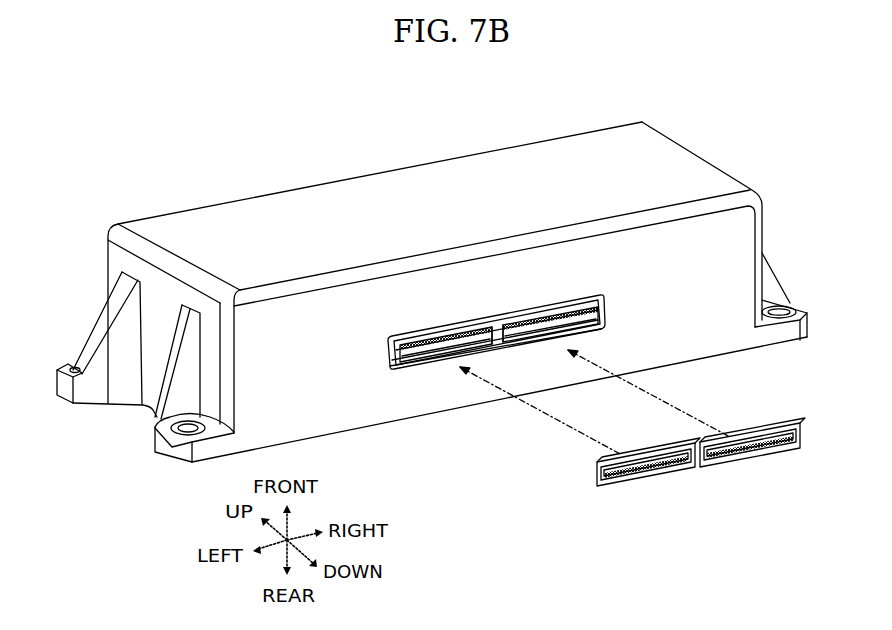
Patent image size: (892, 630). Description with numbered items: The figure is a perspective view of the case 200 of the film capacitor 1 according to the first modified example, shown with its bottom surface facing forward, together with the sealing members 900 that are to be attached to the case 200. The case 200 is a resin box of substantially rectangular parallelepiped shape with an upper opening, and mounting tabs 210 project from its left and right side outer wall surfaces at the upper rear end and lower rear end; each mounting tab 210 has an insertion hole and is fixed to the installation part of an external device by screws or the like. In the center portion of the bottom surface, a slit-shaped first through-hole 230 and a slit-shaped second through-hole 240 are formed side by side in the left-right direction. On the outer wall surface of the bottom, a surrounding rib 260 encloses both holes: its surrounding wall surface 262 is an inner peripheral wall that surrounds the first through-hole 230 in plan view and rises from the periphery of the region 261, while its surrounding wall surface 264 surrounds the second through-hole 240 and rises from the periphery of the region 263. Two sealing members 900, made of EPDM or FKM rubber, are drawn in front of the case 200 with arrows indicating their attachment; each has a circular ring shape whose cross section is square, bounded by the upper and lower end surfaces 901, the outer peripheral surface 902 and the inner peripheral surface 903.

The film capacitor 1 is at (322, 167).
The case 200 is at (712, 152).
The mounting tab 210 is at (798, 303).
The first through-hole 230 is at (583, 335).
The second through-hole 240 is at (440, 360).
The surrounding rib 260 is at (428, 328).
The region 261 is at (600, 328).
The surrounding wall surface 262 is at (582, 308).
The region 263 is at (400, 362).
The surrounding wall surface 264 is at (483, 322).
The sealing member 900 is at (631, 488).
The end surface 901 is at (652, 476).
The outer peripheral surface 902 is at (670, 453).
The inner peripheral surface 903 is at (633, 468).